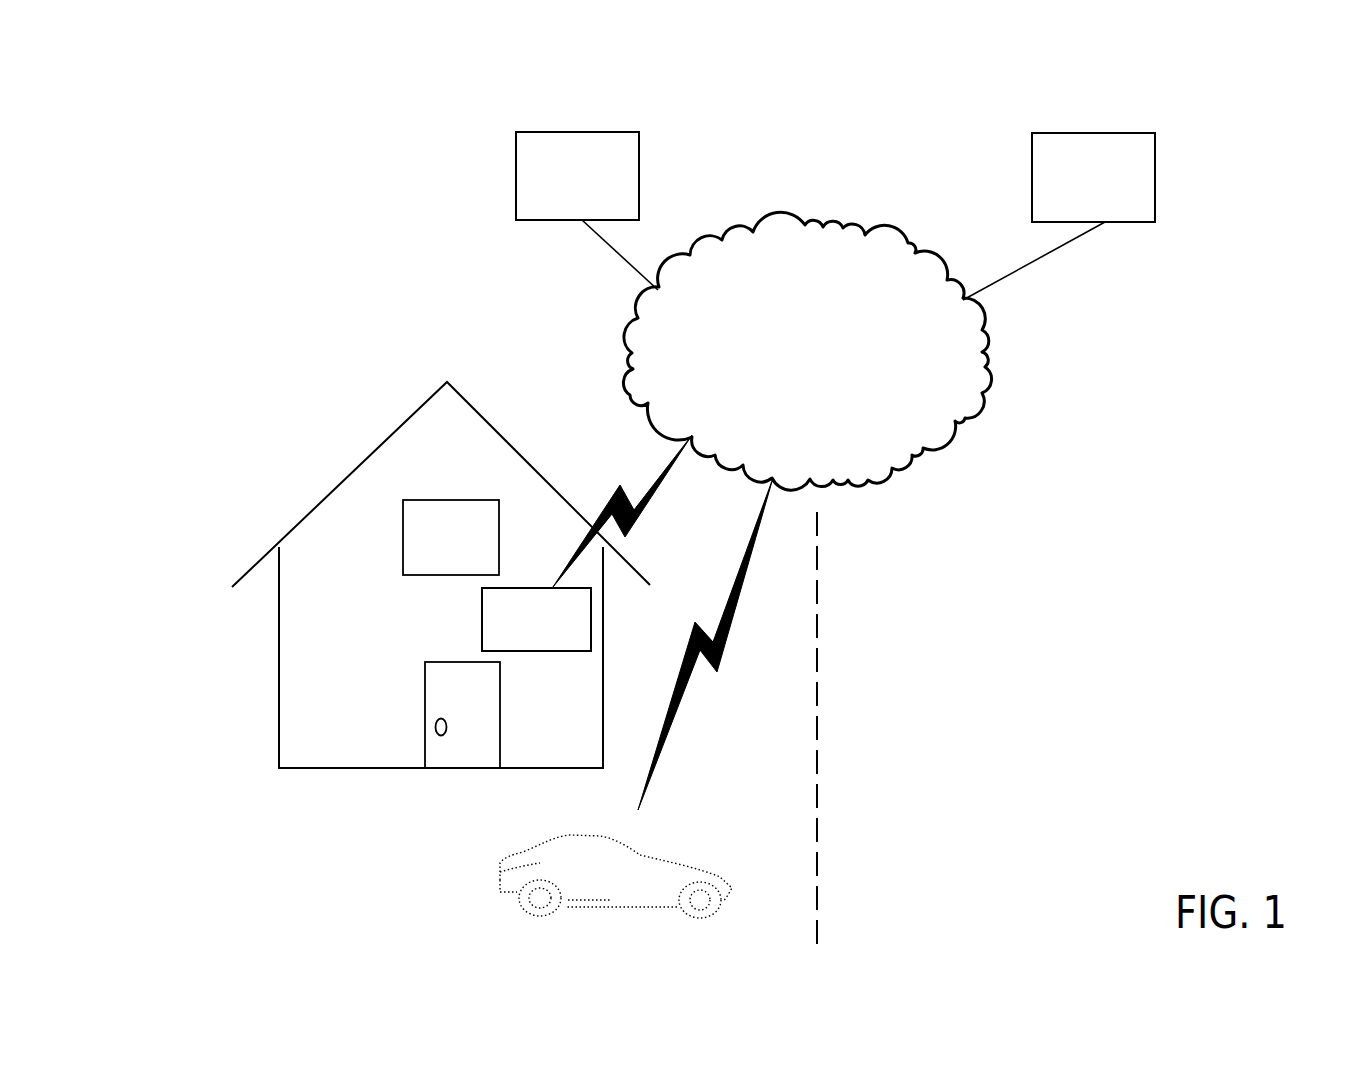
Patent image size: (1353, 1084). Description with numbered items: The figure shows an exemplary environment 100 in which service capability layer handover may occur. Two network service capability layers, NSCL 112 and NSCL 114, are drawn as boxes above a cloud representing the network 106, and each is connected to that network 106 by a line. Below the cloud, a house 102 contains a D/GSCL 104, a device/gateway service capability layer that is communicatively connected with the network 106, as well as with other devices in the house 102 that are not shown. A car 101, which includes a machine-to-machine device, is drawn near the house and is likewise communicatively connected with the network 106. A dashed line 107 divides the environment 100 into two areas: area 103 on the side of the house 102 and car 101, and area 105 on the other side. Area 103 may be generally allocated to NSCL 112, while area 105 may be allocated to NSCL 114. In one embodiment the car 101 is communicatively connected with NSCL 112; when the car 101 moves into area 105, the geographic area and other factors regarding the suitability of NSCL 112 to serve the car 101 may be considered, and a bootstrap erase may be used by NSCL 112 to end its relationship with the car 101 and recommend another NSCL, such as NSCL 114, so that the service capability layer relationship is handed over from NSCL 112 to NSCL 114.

The environment 100 is at (822, 69).
The car 101 is at (517, 888).
The house 102 is at (278, 717).
The area 103 is at (256, 384).
The D/GSCL 104 is at (553, 645).
The area 105 is at (1140, 538).
The network 106 is at (830, 350).
The line 107 is at (817, 846).
The NSCL 112 is at (597, 206).
The NSCL 114 is at (1114, 207).